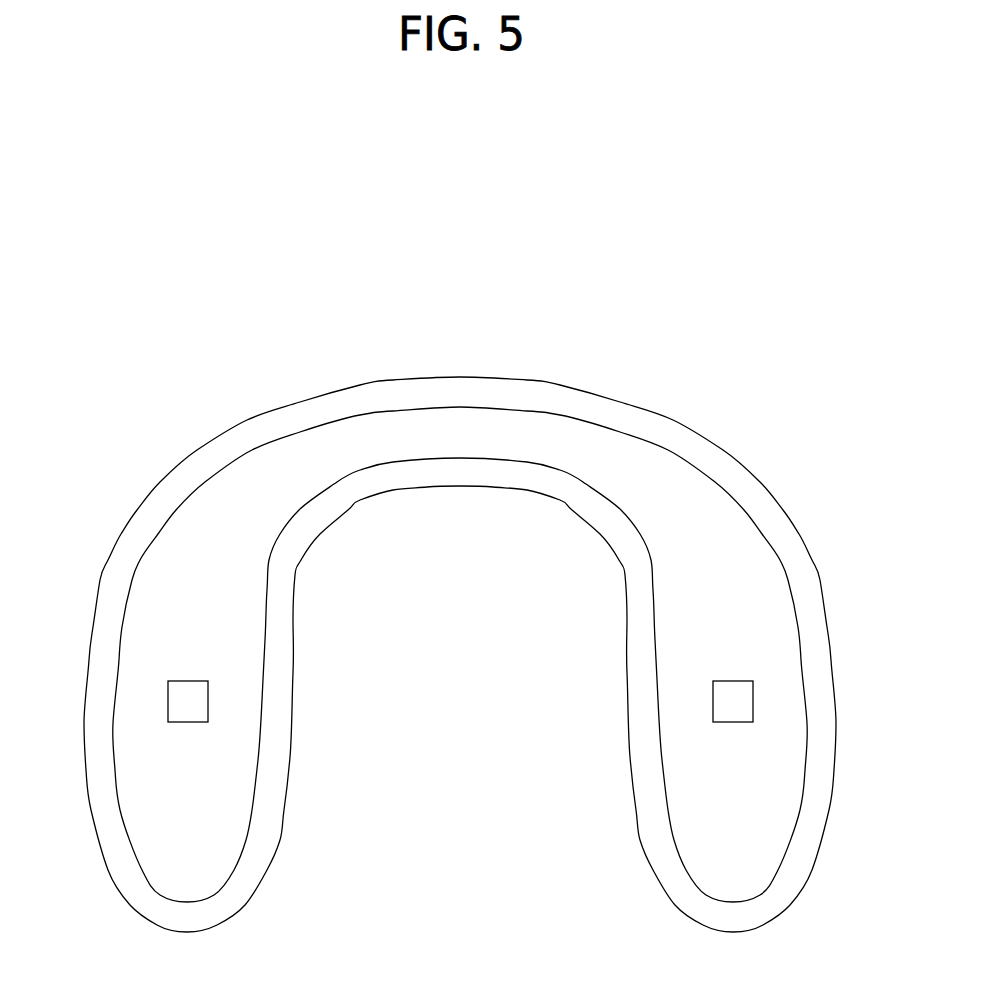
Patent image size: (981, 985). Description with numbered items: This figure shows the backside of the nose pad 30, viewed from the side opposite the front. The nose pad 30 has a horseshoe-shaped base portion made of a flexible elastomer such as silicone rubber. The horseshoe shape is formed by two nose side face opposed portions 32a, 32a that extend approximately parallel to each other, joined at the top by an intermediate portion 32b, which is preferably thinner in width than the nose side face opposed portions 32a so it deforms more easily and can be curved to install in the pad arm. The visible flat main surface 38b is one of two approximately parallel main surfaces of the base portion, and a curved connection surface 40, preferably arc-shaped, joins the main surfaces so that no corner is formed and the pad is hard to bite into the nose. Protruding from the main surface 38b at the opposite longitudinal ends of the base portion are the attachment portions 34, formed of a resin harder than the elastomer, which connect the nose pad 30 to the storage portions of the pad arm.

The nose pad 30 is at (638, 245).
The nose side face opposed portion 32a is at (92, 627).
The intermediate portion 32b is at (460, 378).
The attachment portion 34 is at (202, 700).
The main surface 38b is at (712, 532).
The connection surface 40 is at (503, 477).